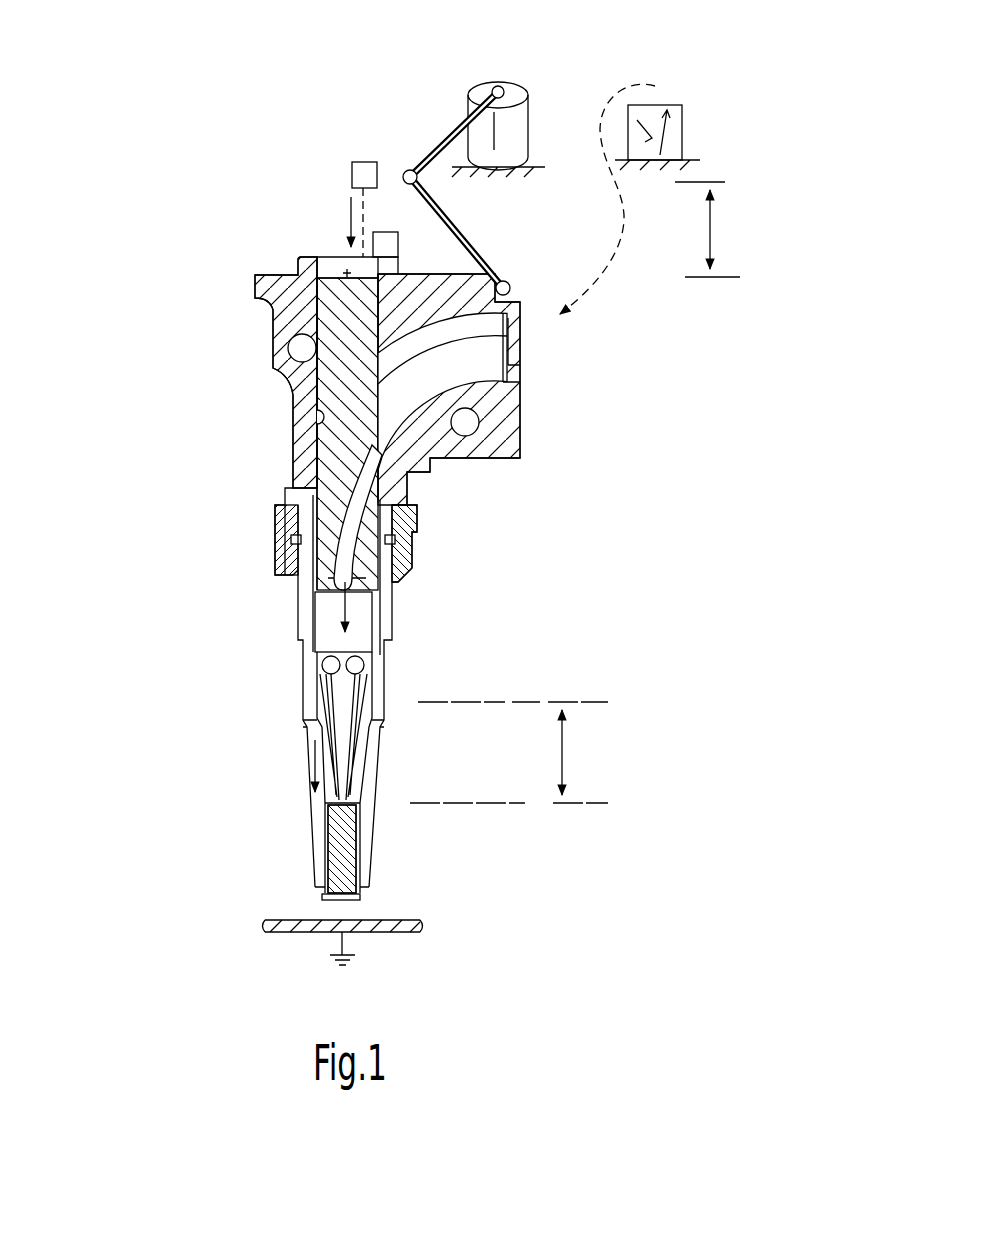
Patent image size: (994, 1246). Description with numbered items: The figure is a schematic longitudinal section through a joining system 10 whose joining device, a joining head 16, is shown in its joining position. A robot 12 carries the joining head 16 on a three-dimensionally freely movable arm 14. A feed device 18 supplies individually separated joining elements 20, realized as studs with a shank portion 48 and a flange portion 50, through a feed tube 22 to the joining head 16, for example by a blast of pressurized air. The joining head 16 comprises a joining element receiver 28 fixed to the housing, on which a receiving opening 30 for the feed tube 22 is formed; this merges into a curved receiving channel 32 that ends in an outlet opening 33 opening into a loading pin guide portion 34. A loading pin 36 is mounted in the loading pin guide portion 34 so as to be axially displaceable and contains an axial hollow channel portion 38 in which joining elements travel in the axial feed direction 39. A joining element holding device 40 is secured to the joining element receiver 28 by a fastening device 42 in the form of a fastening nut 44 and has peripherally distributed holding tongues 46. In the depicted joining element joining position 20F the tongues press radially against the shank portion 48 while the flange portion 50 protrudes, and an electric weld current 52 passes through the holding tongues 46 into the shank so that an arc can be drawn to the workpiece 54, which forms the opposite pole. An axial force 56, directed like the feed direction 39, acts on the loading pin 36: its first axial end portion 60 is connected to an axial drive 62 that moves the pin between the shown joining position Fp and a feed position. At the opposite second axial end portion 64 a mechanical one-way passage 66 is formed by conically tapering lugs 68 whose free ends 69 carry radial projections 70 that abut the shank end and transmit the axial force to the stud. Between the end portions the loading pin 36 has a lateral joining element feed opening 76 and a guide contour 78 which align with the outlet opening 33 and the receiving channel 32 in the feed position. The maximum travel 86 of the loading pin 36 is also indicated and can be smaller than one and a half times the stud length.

The joining system 10 is at (243, 157).
The robot 12 is at (440, 118).
The arm 14 is at (414, 170).
The joining head 16 is at (272, 266).
The feed device 18 is at (683, 102).
The joining element 20 is at (668, 120).
The feed tube 22 is at (613, 199).
The joining element receiver 28 is at (508, 443).
The receiving opening 30 is at (520, 372).
The receiving channel 32 is at (473, 354).
The outlet opening 33 is at (374, 392).
The loading pin guide portion 34 is at (318, 415).
The loading pin 36 is at (347, 320).
The hollow channel portion 38 is at (327, 605).
The axial feed direction 39 is at (340, 611).
The joining element holding device 40 is at (290, 636).
The fastening device 42 is at (304, 548).
The fastening nut 44 is at (285, 507).
The holding tongues 46 is at (322, 858).
The shank portion 48 is at (327, 832).
The flange portion 50 is at (320, 907).
The electric weld current 52 is at (320, 765).
The workpiece 54 is at (383, 935).
The axial force 56 is at (348, 215).
The first axial end portion 60 is at (345, 283).
The axial drive 62 is at (360, 168).
The second axial end portion 64 is at (407, 596).
The one-way passage 66 is at (380, 703).
The lugs 68 is at (345, 686).
The free ends 69 is at (353, 783).
The radial projections 70 is at (360, 797).
The lateral joining element feed opening 76 is at (418, 466).
The guide contour 78 is at (405, 517).
The maximum travel 86 is at (710, 222).
The joining position Fp is at (452, 629).
The joining element joining position 20F is at (347, 891).